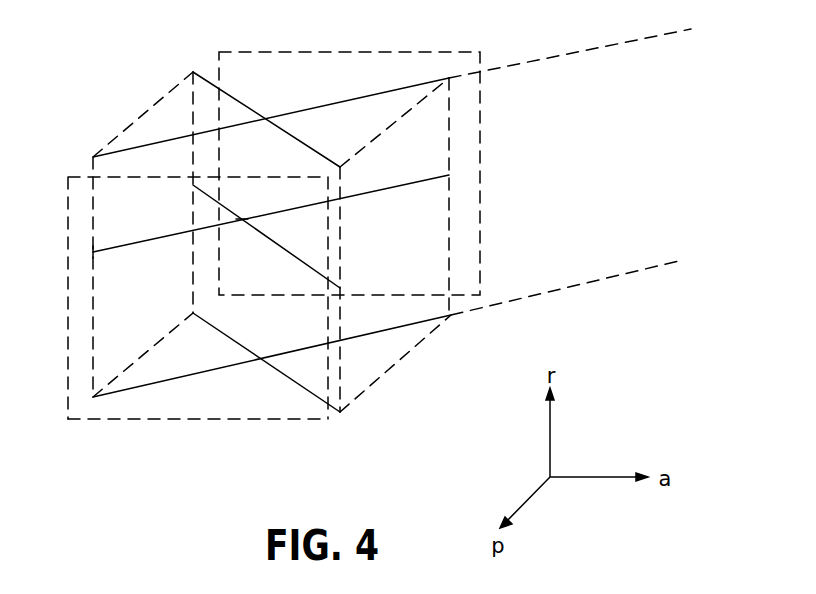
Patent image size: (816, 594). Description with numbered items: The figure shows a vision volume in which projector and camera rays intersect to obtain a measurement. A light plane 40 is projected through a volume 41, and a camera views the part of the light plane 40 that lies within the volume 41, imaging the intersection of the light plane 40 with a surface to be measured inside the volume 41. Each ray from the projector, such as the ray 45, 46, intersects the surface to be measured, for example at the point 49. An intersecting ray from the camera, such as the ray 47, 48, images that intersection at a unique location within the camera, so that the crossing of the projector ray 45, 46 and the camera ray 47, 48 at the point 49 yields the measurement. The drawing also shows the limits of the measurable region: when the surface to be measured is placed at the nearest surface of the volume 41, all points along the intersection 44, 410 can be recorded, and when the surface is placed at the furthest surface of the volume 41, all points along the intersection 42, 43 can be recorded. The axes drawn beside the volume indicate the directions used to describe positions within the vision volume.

The light plane 40 is at (538, 92).
The volume 41 is at (245, 419).
The intersection end point 42 is at (93, 397).
The intersection end point 43 is at (93, 157).
The intersection end point 44 is at (449, 78).
The projector ray end point 45 is at (449, 175).
The projector ray end point 46 is at (93, 252).
The camera ray end point 47 is at (340, 288).
The camera ray end point 48 is at (193, 185).
The intersection point 49 is at (242, 219).
The intersection end point 410 is at (451, 315).